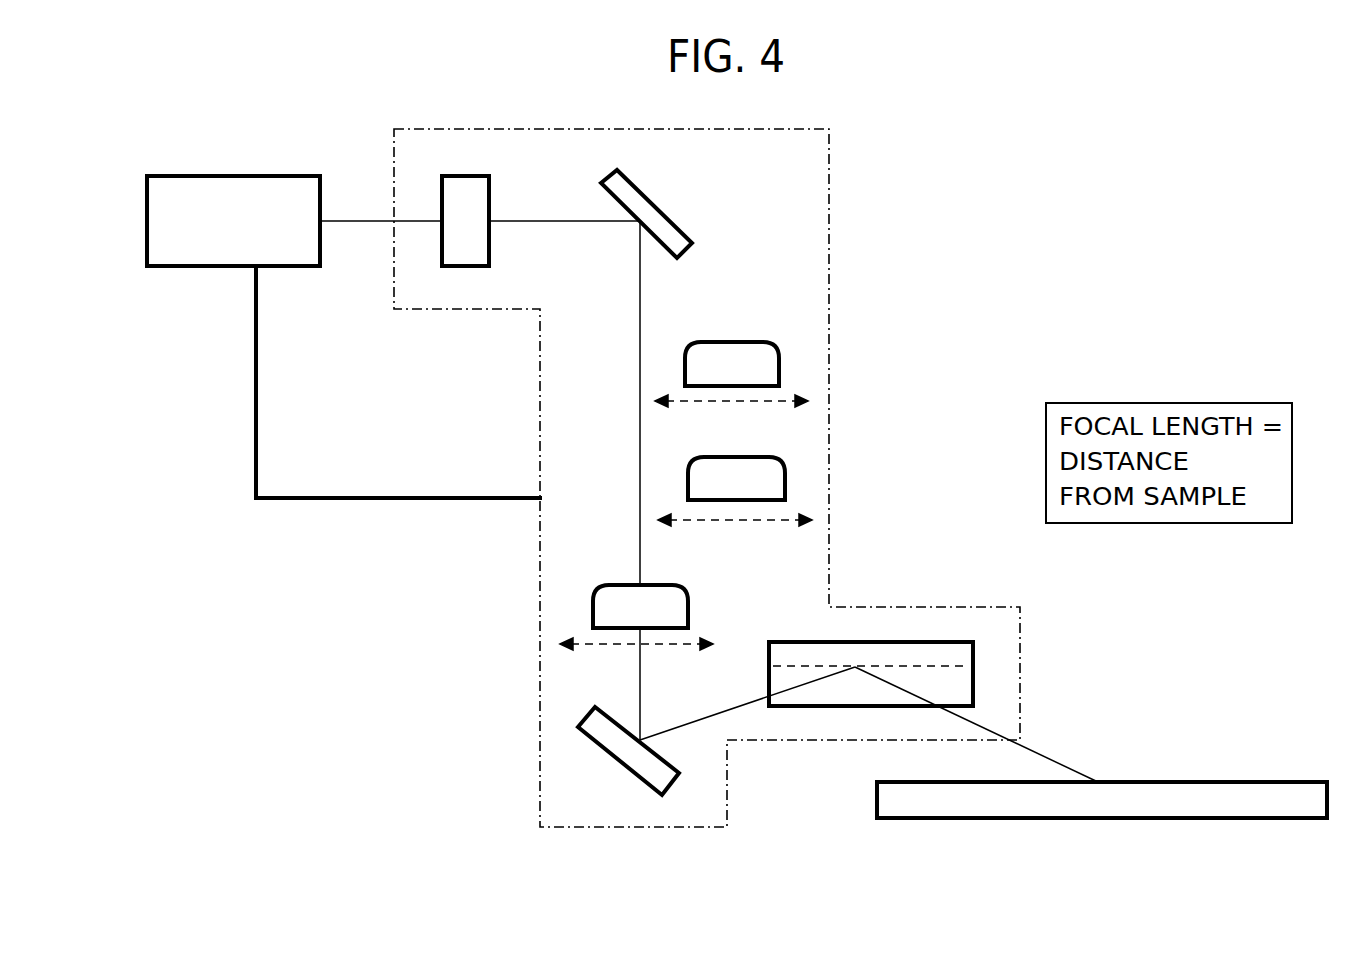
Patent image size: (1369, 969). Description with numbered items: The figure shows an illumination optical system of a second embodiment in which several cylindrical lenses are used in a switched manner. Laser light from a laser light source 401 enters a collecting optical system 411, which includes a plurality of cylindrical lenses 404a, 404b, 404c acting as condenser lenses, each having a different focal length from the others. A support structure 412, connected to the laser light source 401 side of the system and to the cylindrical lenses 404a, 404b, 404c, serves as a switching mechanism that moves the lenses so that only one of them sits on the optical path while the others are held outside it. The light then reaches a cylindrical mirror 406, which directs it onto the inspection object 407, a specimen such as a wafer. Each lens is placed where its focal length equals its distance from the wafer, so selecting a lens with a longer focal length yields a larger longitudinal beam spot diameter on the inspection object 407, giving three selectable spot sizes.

The laser light source 401 is at (231, 284).
The collecting optical system 411 is at (707, 478).
The support structure 412 is at (399, 382).
The cylindrical lens 404a is at (802, 363).
The cylindrical lens 404b is at (804, 479).
The cylindrical lens 404c is at (574, 591).
The cylindrical mirror 406 is at (880, 628).
The inspection object 407 is at (1102, 848).